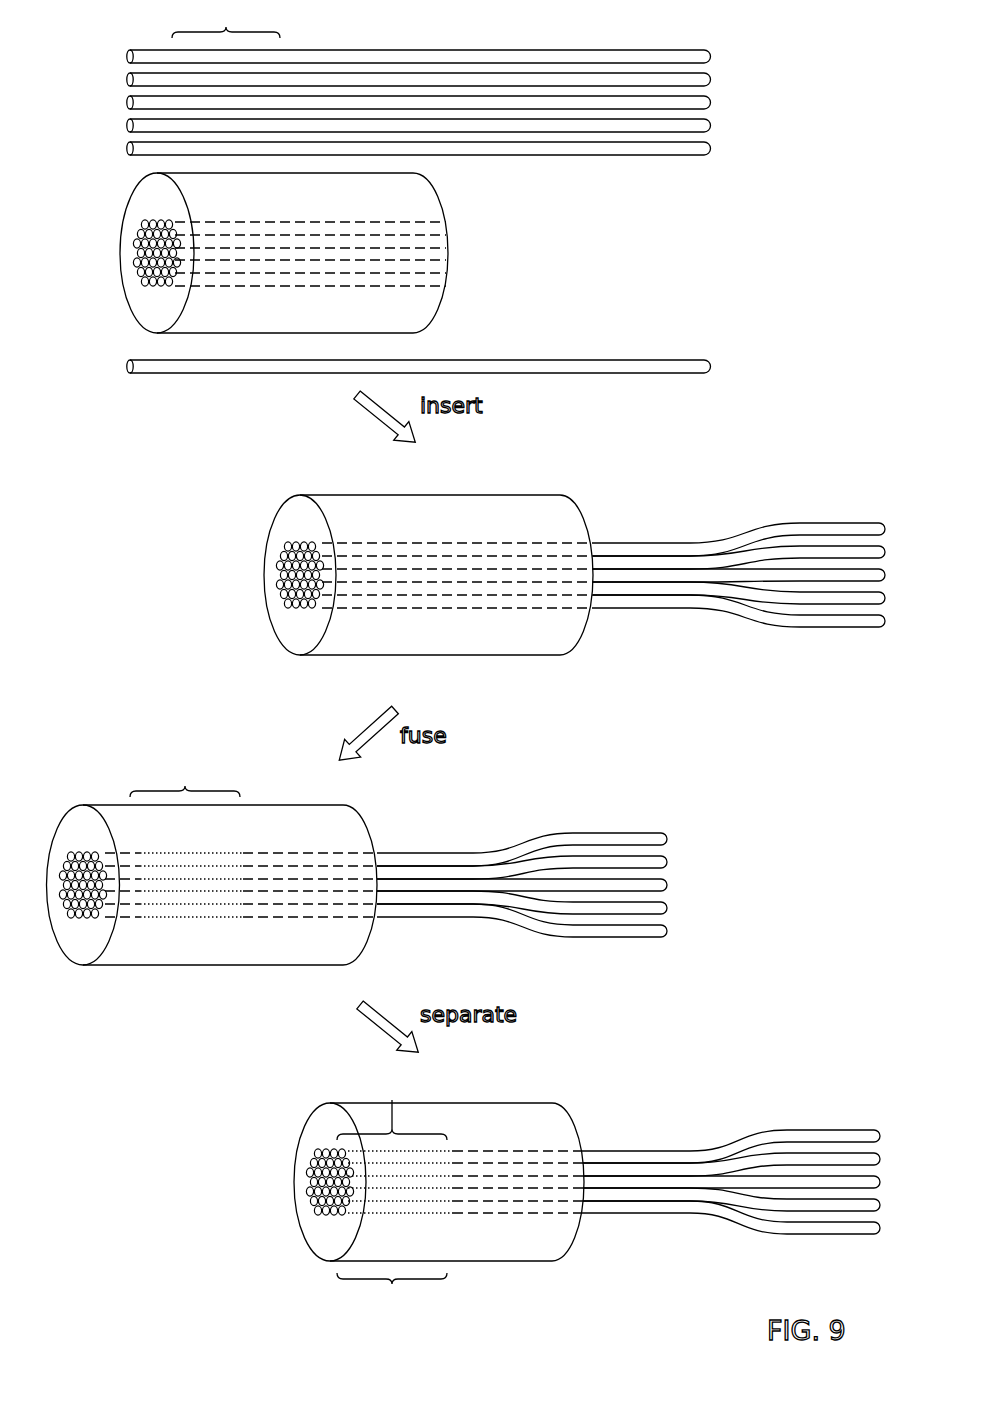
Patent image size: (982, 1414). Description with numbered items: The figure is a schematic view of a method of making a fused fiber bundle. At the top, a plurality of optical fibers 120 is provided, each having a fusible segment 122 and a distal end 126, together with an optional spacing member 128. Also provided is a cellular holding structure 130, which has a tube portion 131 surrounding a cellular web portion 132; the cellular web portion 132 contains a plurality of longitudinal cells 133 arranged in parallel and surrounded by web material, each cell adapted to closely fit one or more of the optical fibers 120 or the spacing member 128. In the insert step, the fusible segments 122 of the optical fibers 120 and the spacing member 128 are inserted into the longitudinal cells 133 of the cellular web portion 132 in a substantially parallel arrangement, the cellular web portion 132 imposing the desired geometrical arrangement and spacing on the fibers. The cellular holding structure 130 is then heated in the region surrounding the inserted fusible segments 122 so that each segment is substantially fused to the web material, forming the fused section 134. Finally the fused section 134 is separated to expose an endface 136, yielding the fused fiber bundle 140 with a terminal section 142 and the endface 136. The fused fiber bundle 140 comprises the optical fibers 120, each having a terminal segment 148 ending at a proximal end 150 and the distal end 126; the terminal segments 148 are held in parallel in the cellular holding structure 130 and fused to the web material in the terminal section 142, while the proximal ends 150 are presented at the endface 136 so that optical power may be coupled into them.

The optical fibers 120 is at (622, 127).
The fusible segment 122 is at (226, 19).
The distal end 126 is at (706, 58).
The spacing member 128 is at (420, 357).
The cellular holding structure 130 is at (397, 311).
The tube portion 131 is at (155, 314).
The cellular web portion 132 is at (153, 222).
The longitudinal cells 133 is at (392, 260).
The fused section 134 is at (186, 839).
The endface 136 is at (316, 1137).
The fused fiber bundle 140 is at (668, 1073).
The terminal section 142 is at (395, 1143).
The terminal segment 148 is at (392, 1294).
The proximal end 150 is at (312, 1193).